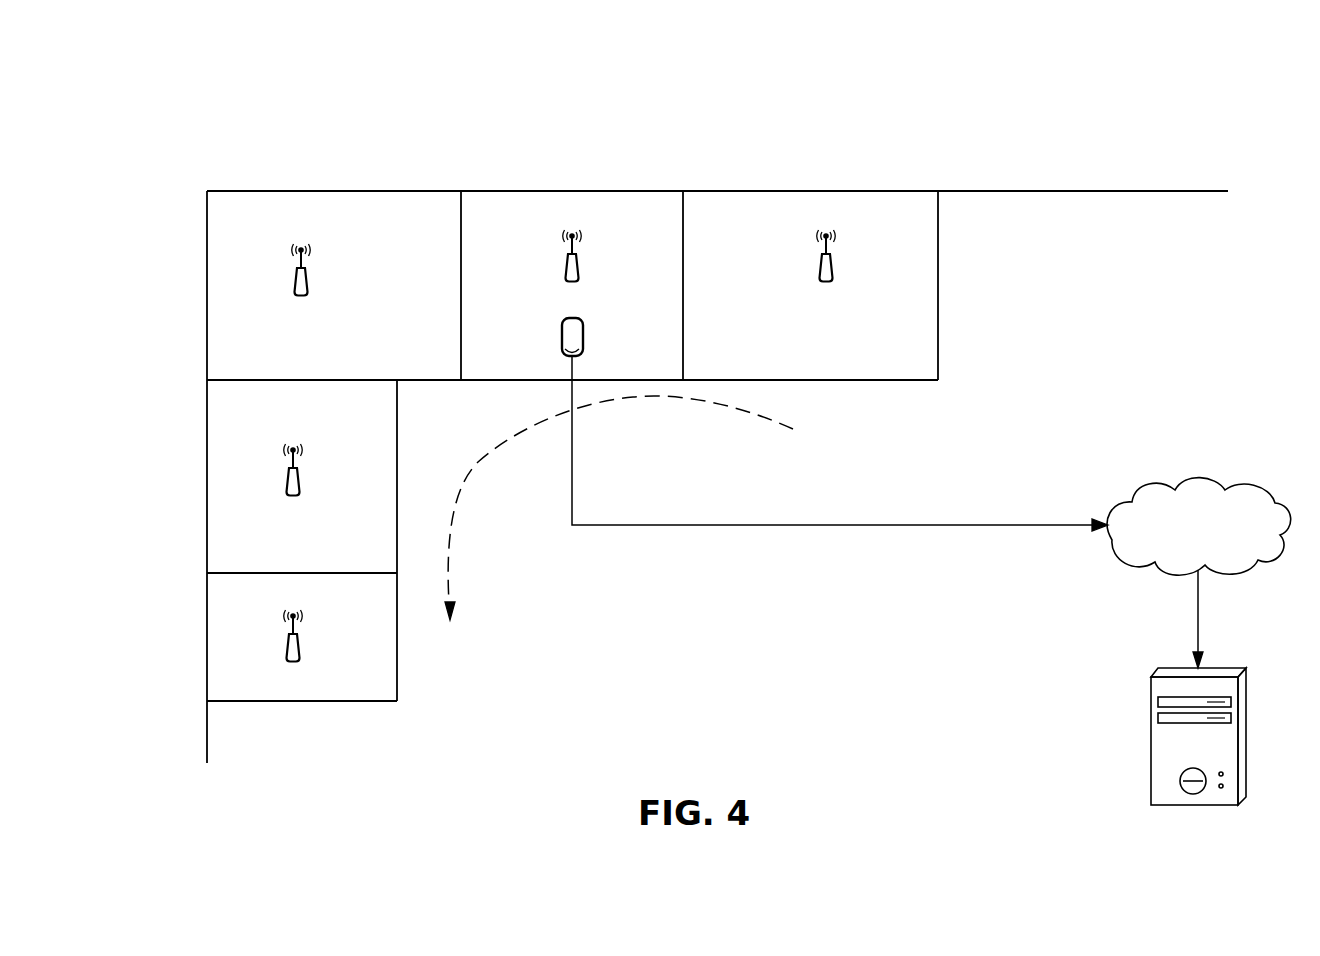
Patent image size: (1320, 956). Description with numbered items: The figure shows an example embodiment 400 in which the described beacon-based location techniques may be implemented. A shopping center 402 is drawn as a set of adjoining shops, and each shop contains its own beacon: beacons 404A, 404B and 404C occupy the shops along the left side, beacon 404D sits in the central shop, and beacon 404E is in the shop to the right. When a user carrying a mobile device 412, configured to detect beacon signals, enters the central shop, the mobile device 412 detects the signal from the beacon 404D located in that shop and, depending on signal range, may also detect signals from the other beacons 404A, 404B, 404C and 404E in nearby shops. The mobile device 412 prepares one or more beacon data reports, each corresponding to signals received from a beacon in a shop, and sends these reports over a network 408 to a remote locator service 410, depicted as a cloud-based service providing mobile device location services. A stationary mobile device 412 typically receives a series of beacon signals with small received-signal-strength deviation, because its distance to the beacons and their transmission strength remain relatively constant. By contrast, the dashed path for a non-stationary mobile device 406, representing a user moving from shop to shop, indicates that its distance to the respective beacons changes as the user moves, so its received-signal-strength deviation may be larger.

The example embodiment 400 is at (203, 88).
The shopping center 402 is at (573, 191).
The beacon 404A is at (295, 663).
The beacon 404B is at (297, 497).
The beacon 404C is at (302, 297).
The beacon 404D is at (565, 251).
The beacon 404E is at (835, 283).
The non-stationary mobile device 406 is at (455, 495).
The network 408 is at (1197, 477).
The remote locator service 410 is at (1150, 723).
The mobile device 412 is at (568, 333).